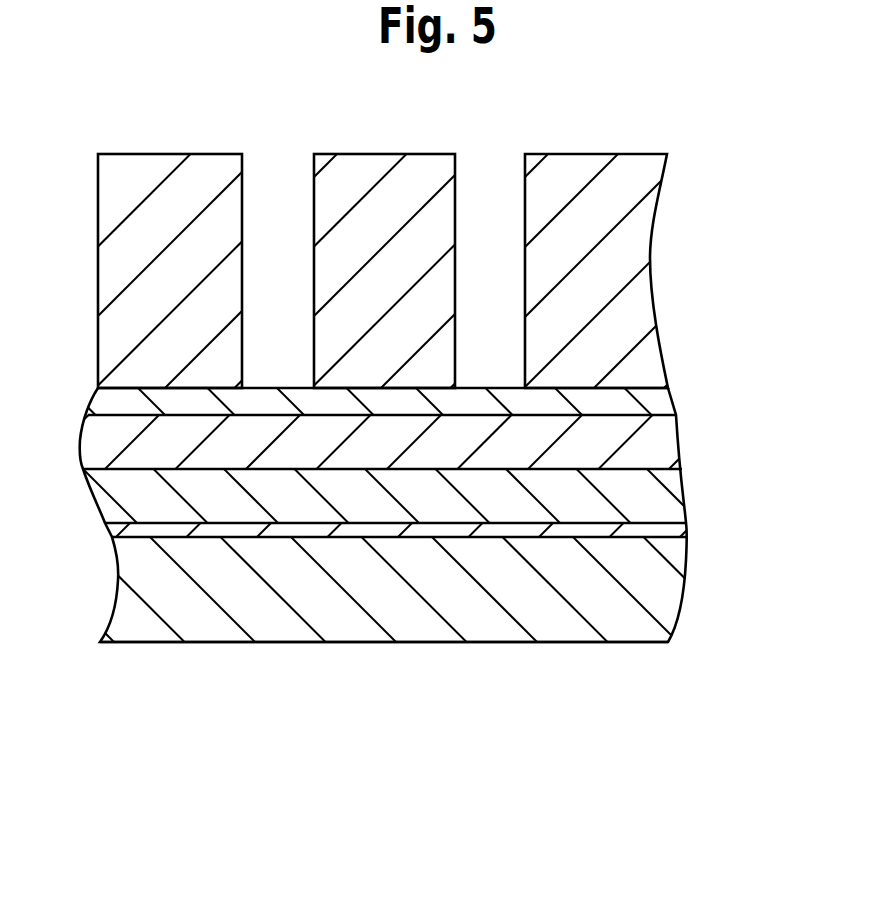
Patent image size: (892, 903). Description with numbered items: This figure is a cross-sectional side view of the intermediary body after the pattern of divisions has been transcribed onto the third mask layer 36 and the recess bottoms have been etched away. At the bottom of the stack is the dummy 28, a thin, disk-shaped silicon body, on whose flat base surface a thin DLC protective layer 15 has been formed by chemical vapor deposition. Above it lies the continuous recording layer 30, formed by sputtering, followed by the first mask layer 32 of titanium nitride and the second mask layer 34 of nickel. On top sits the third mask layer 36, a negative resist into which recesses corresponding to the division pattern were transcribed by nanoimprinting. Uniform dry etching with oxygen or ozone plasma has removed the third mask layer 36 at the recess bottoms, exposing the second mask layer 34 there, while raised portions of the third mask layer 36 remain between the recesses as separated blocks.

The third mask layer 36 is at (650, 254).
The second mask layer 34 is at (672, 393).
The first mask layer 32 is at (674, 429).
The continuous recording layer 30 is at (683, 478).
The DLC protective layer 15 is at (683, 527).
The dummy 28 is at (685, 565).